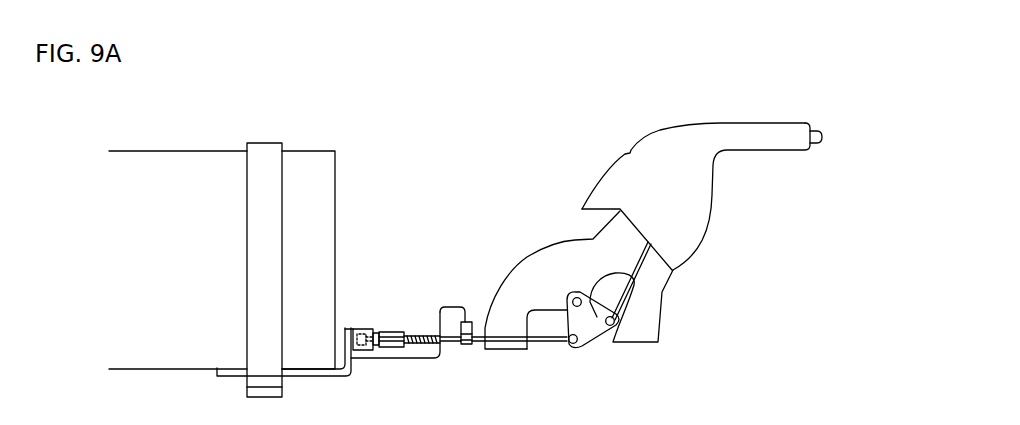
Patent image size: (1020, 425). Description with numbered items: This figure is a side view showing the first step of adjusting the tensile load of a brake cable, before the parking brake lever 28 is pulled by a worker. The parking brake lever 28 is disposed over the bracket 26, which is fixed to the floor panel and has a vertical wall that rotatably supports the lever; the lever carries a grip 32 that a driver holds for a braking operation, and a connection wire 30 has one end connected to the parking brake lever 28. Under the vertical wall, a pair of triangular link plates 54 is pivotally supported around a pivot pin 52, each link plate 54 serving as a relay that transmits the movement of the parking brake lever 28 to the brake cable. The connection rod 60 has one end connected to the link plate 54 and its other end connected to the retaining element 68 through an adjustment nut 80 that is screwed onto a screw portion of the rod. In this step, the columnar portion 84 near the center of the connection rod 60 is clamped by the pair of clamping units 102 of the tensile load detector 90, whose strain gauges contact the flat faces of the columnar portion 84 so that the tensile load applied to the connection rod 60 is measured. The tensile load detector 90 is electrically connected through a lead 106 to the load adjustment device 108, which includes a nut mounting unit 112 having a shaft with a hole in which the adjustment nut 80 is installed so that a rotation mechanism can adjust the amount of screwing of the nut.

The load adjustment device 108 is at (304, 144).
The nut mounting unit 112 is at (354, 328).
The adjustment nut 80 is at (373, 324).
The retaining element 68 is at (397, 330).
The lead 106 is at (386, 360).
The connection rod 60 is at (447, 359).
The columnar portion 84 is at (475, 348).
The tensile load detector 90 is at (476, 285).
The clamping unit 102 is at (477, 325).
The bracket 26 is at (551, 240).
The parking brake lever 28 is at (751, 122).
The grip 32 is at (764, 141).
The connection wire 30 is at (666, 294).
The pivot pin 52 is at (574, 298).
The link plate 54 is at (588, 326).